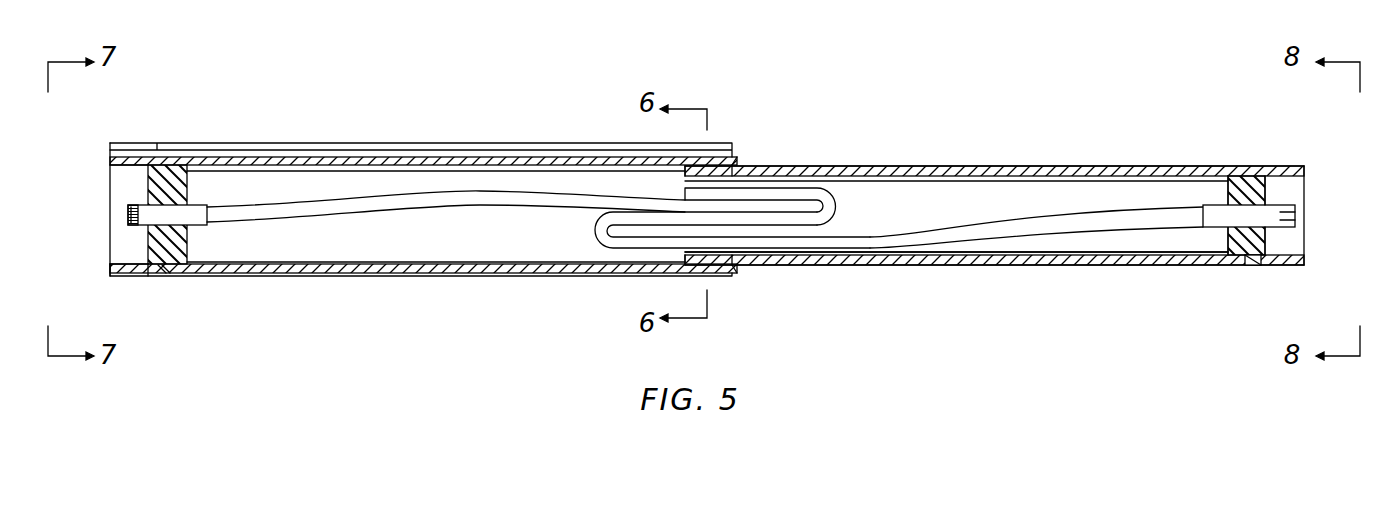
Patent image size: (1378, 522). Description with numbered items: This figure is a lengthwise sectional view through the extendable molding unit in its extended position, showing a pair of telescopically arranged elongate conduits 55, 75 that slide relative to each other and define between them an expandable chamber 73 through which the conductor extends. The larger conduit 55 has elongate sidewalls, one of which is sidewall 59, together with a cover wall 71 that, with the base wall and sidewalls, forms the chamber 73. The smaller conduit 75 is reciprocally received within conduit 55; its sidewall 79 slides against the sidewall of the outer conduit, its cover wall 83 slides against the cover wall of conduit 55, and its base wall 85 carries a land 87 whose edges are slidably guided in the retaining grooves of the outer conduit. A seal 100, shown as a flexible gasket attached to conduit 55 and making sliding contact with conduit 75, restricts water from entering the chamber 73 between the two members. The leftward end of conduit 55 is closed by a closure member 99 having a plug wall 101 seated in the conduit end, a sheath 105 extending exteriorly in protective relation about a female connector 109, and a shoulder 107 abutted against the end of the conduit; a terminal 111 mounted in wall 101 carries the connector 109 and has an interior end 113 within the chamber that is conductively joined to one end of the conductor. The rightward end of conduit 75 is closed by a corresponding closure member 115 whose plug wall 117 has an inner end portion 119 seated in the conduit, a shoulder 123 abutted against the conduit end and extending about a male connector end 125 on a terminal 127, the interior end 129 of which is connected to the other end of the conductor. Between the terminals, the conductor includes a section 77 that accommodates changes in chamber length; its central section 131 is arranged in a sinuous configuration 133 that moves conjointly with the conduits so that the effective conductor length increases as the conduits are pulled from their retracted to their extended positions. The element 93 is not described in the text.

The conduit 55 is at (370, 277).
The sidewall 59 is at (415, 148).
The cover wall 71 is at (520, 278).
The chamber 73 is at (360, 253).
The conduit 75 is at (992, 267).
The section 77 is at (583, 223).
The sidewall 79 is at (1120, 240).
The cover wall 83 is at (890, 266).
The base wall 85 is at (1078, 165).
The land 87 is at (1036, 166).
The outer tube hatched wall 93 is at (540, 152).
The closure member 99 is at (128, 138).
The seal 100 is at (737, 158).
The wall or plug 101 is at (188, 247).
The sheath or shroud 105 is at (137, 276).
The abutment or shoulder 107 is at (163, 273).
The female connector 109 is at (127, 213).
The terminal 111 is at (127, 222).
The interior end 113 is at (189, 204).
The closure member 115 is at (1276, 163).
The wall or plug 117 is at (1262, 246).
The inner end portion 119 is at (1205, 205).
The abutment or shoulder 123 is at (1243, 262).
The male connector end 125 is at (1285, 228).
The terminal 127 is at (1298, 214).
The interior end 129 is at (1226, 197).
The central section 131 is at (852, 220).
The sinuous configuration 133 is at (838, 202).